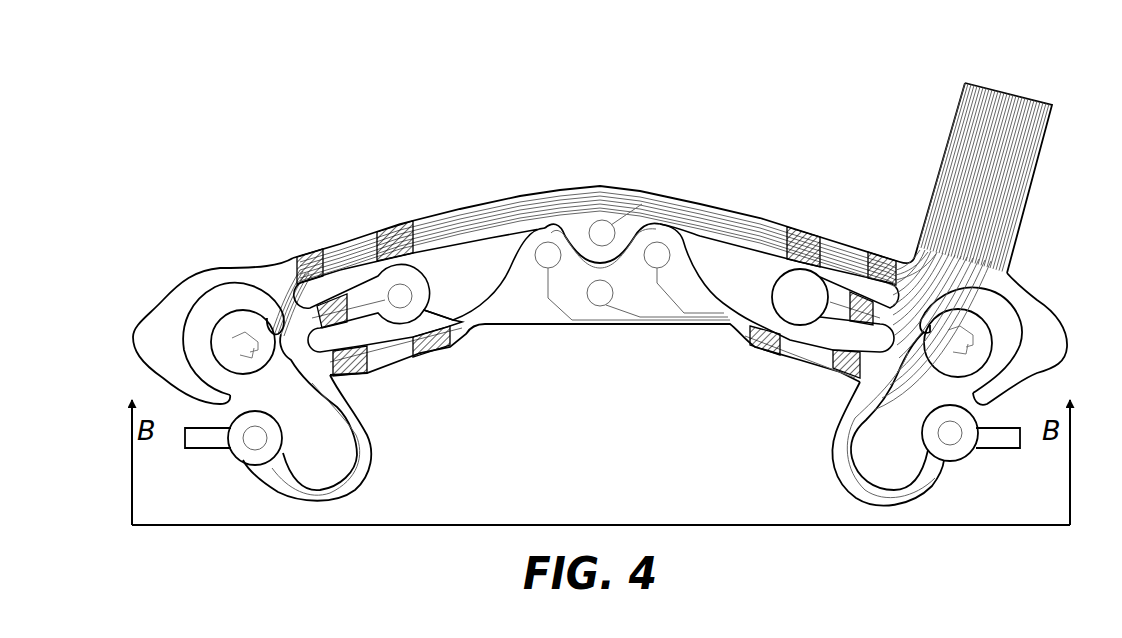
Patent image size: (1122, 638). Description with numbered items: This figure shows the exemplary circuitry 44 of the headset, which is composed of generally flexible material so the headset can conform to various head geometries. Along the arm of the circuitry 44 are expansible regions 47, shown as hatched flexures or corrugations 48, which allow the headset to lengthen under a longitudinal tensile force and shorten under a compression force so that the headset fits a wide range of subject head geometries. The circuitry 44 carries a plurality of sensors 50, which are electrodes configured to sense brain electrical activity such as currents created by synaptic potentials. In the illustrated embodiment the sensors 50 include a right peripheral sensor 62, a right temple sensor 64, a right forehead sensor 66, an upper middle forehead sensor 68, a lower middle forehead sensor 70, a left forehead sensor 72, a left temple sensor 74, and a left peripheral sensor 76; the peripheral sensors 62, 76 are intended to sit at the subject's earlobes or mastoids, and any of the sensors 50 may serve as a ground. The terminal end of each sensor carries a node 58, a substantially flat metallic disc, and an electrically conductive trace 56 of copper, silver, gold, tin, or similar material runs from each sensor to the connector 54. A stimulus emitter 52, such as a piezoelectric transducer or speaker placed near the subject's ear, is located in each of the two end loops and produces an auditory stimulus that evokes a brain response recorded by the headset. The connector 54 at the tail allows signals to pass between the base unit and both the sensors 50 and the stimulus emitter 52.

The circuitry 44 is at (694, 197).
The expansible regions 47 is at (383, 219).
The flexures or corrugations 48 is at (404, 230).
The sensors 50 is at (431, 279).
The stimulus emitter 52 is at (233, 306).
The connector 54 is at (1037, 92).
The electrically conductive trace 56 is at (628, 207).
The node 58 is at (603, 220).
The right peripheral sensor 62 is at (263, 440).
The right temple sensor 64 is at (410, 296).
The right forehead sensor 66 is at (541, 262).
The upper middle forehead sensor 68 is at (591, 227).
The lower middle forehead sensor 70 is at (602, 302).
The left forehead sensor 72 is at (668, 254).
The left temple sensor 74 is at (778, 347).
The left peripheral sensor 76 is at (942, 433).